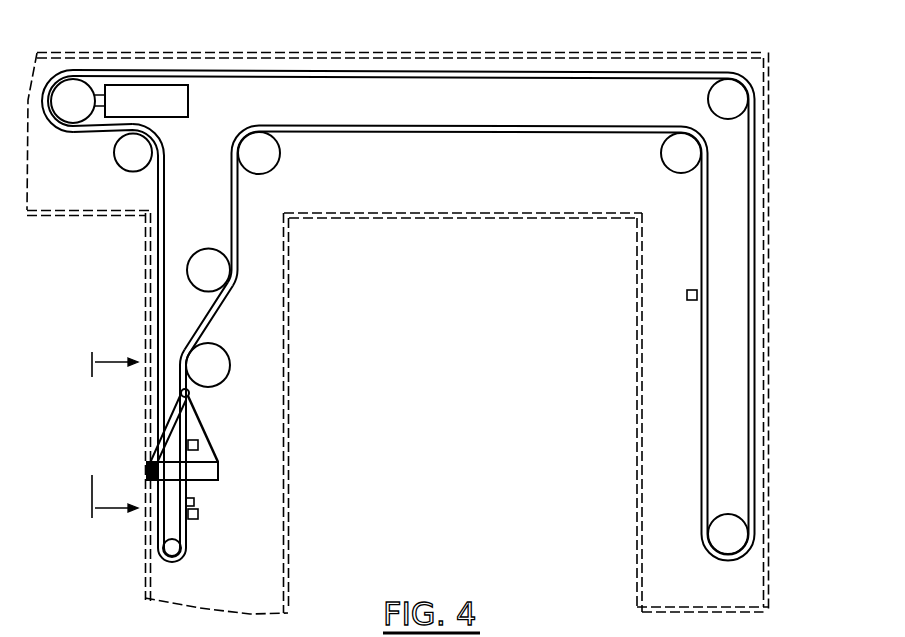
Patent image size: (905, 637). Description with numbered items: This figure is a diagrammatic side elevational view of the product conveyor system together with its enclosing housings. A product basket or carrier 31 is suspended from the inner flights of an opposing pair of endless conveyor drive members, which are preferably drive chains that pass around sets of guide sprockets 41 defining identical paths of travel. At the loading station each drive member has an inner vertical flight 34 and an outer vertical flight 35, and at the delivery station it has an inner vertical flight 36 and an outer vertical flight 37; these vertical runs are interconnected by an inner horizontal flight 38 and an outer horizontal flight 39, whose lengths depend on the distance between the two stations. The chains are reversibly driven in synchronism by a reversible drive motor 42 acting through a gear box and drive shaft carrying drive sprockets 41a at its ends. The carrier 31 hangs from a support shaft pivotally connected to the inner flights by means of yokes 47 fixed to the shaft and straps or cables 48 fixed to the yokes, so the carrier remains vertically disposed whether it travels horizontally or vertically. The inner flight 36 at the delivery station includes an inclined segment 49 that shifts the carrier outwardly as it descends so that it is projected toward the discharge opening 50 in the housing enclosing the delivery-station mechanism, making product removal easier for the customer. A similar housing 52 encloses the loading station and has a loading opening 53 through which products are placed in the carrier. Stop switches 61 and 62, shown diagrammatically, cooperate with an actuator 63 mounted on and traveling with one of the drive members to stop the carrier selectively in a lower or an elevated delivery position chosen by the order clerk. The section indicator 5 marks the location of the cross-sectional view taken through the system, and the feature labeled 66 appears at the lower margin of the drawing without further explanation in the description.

The product carrier 31 is at (212, 470).
The inner vertical flight 34 is at (640, 478).
The outer vertical flight 35 is at (753, 302).
The inner vertical flight 36 is at (237, 235).
The outer vertical flight 37 is at (160, 252).
The inner horizontal flight 38 is at (423, 134).
The outer horizontal flight 39 is at (452, 73).
The guide sprocket 41 is at (726, 88).
The drive sprocket 41a is at (77, 88).
The reversible drive motor 42 is at (163, 92).
The yoke 47 is at (193, 397).
The strap 48 is at (188, 425).
The inclined segment 49 is at (217, 313).
The discharge opening 50 is at (150, 397).
The housing 52 is at (768, 232).
The loading opening 53 is at (768, 407).
The section line 5- 5 is at (100, 438).
The stop switch 61 is at (200, 445).
The stop switch 62 is at (196, 517).
The actuator 63 is at (197, 502).
The support 66 is at (60, 636).